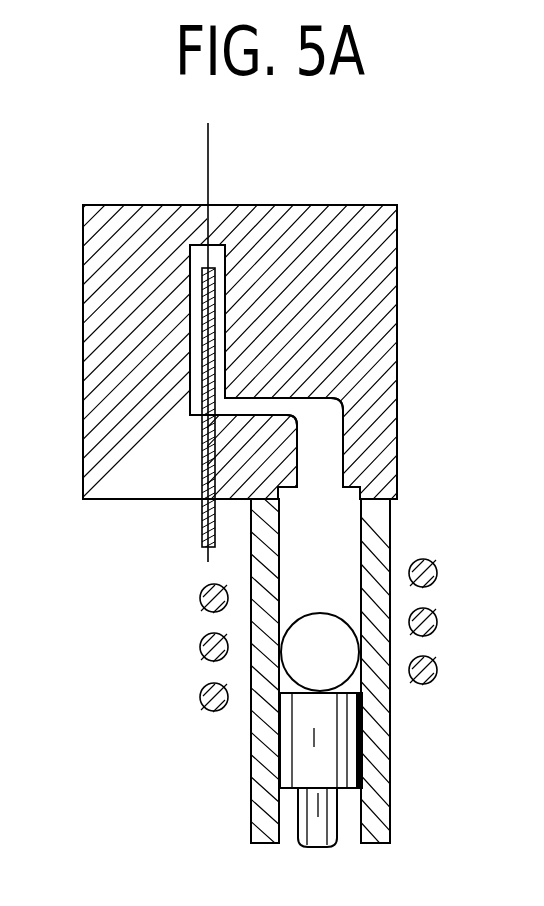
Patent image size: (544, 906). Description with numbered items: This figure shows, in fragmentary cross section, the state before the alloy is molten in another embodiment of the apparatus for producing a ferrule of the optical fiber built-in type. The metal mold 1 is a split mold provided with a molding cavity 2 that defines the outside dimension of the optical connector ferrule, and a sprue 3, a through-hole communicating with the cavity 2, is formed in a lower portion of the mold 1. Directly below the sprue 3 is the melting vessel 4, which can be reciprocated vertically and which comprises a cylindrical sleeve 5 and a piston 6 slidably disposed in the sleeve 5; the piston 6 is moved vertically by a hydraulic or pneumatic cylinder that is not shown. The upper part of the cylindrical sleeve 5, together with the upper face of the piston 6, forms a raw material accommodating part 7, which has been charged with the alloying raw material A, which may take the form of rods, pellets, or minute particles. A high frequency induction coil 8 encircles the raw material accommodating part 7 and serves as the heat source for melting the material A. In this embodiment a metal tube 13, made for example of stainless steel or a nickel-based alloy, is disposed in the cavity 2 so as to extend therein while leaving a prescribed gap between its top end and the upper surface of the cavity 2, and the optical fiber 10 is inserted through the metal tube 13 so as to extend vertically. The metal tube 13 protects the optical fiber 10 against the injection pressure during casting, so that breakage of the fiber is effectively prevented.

The metal mold 1 is at (397, 322).
The molding cavity 2 is at (215, 255).
The sprue 3 is at (323, 483).
The melting vessel 4 is at (397, 758).
The cylindrical sleeve 5 is at (252, 757).
The piston 6 is at (347, 738).
The raw material accommodating part 7 is at (352, 560).
The high frequency induction coil 8 is at (435, 630).
The optical fiber 10 is at (205, 142).
The metal tube 13 is at (202, 532).
The alloying raw material A is at (317, 610).